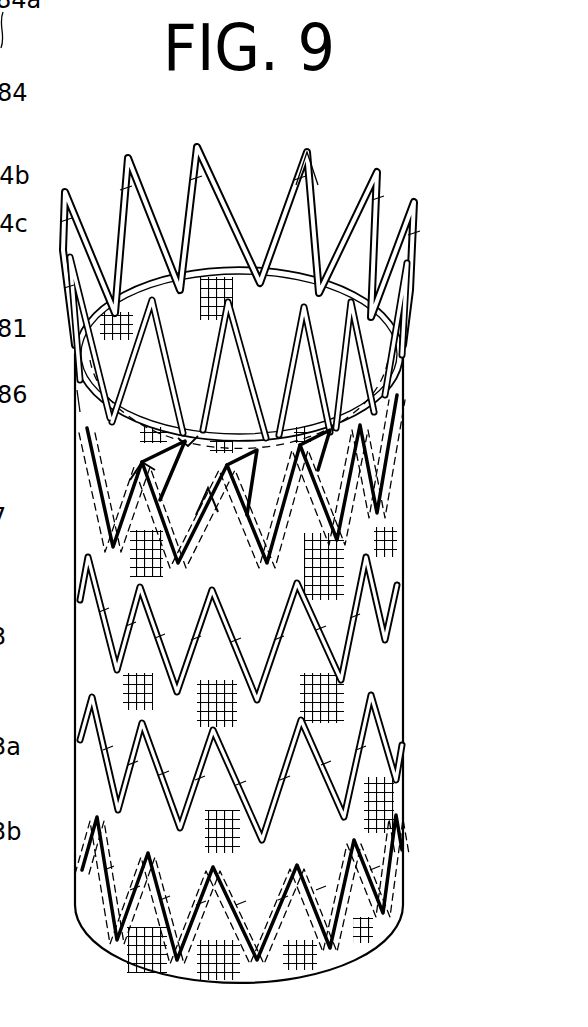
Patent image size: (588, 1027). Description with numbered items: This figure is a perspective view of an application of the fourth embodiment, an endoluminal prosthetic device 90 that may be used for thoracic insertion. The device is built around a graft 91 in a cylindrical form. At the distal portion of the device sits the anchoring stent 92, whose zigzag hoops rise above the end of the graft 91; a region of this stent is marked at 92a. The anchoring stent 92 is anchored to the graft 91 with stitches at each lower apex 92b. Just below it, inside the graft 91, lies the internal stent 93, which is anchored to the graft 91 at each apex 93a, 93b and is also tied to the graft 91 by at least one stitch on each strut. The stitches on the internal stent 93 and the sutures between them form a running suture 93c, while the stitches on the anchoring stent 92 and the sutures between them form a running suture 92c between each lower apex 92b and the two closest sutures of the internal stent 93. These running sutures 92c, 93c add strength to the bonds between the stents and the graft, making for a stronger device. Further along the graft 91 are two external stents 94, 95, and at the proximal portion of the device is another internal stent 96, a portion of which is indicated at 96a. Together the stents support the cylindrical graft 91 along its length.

The endoluminal prosthetic device 90 is at (366, 132).
The graft 91 is at (403, 443).
The anchoring stent 92 is at (380, 232).
The crown stent apex 92a is at (293, 194).
The lower apex 92b is at (182, 442).
The running suture 92c is at (79, 398).
The internal stent 93 is at (102, 520).
The apex 93a is at (266, 566).
The apex 93b is at (140, 463).
The running suture 93c is at (207, 488).
The external stent 94 is at (384, 593).
The external stent 95 is at (384, 720).
The internal stent 96 is at (390, 843).
The distal ring stent strut 96a is at (304, 882).